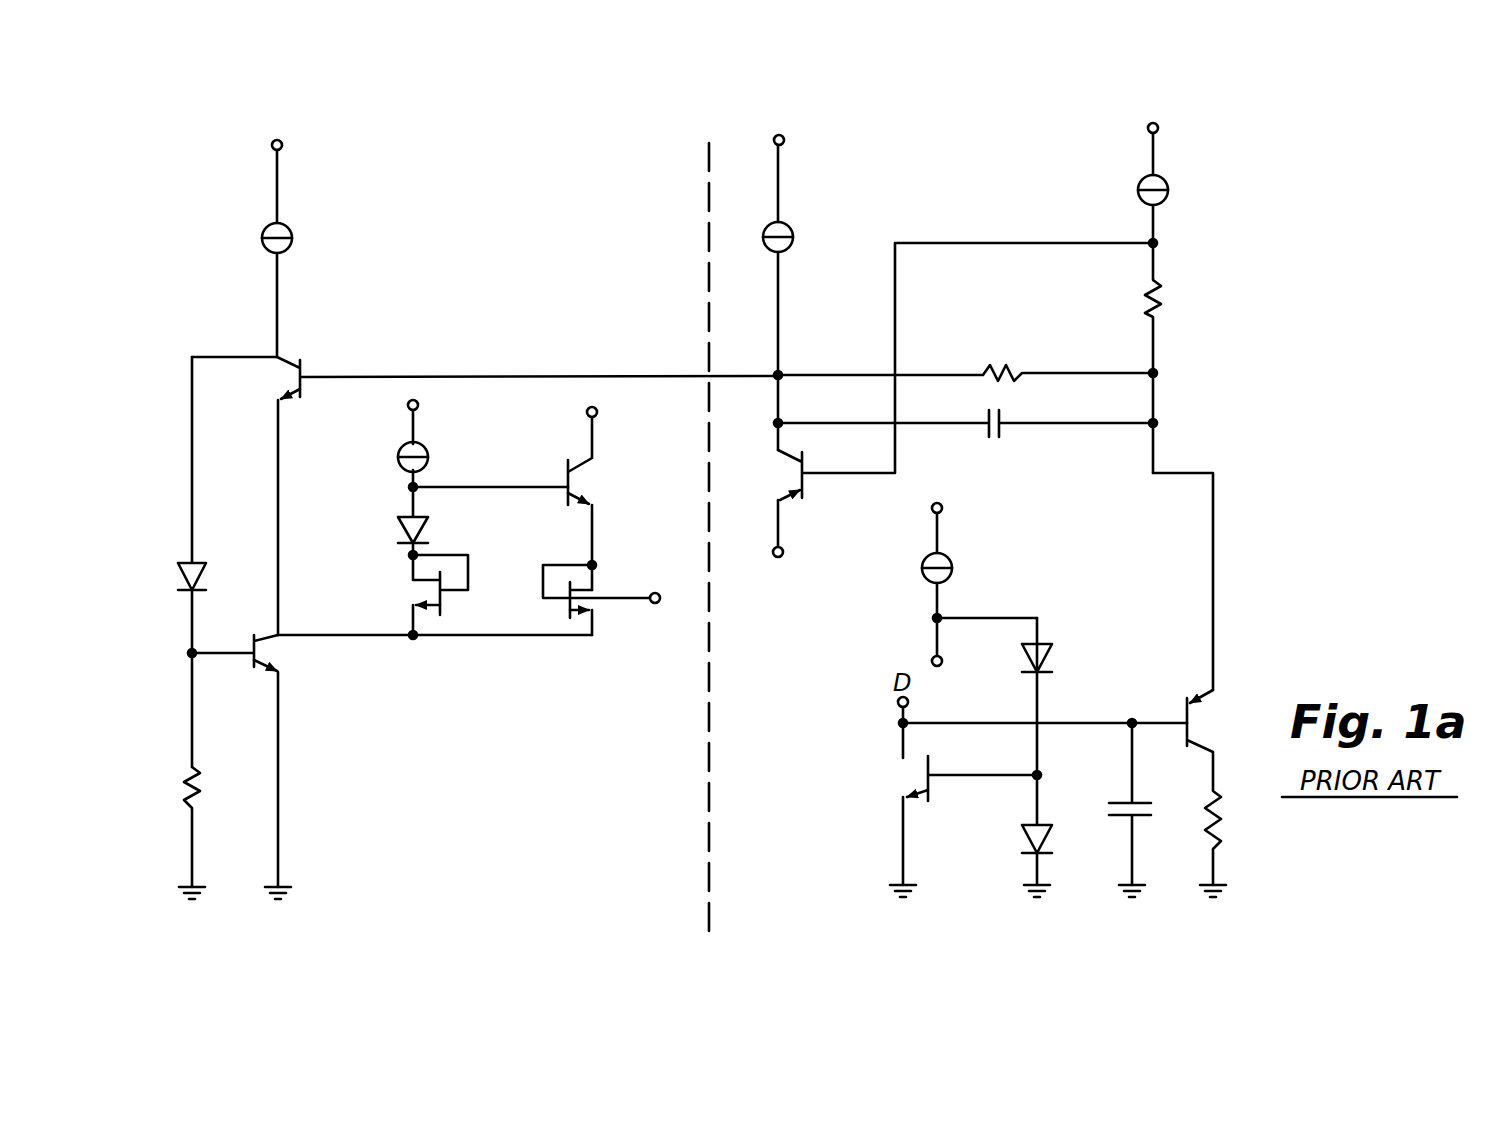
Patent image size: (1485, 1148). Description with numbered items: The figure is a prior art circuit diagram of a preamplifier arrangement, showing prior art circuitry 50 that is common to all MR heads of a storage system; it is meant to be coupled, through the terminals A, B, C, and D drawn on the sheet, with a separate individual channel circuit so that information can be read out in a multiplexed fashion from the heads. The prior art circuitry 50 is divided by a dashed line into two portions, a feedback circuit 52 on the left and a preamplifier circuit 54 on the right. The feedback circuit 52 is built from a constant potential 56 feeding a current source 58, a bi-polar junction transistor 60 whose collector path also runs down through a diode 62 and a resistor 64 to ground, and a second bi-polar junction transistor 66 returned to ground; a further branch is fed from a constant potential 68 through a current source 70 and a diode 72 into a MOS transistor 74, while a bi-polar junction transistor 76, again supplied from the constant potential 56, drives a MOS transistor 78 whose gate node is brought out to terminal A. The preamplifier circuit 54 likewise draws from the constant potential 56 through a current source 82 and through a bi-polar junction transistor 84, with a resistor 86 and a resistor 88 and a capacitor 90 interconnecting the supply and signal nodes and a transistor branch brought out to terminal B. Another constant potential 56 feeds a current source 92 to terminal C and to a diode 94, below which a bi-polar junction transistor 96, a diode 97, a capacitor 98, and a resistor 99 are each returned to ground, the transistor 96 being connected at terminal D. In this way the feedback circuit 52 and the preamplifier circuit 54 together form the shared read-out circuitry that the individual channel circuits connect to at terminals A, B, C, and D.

The prior art circuitry 50 is at (700, 158).
The feedback circuit 52 is at (484, 257).
The preamplifier circuit 54 is at (962, 166).
The constant potential 56 is at (283, 144).
The current source 58 is at (292, 230).
The bi-polar junction transistor 60 is at (304, 368).
The diode 62 is at (207, 578).
The resistor 64 is at (203, 781).
The bi-polar junction transistor 66 is at (258, 670).
The constant potential 68 is at (418, 402).
The current source 70 is at (401, 447).
The diode 72 is at (398, 532).
The MOS transistor 74 is at (443, 600).
The bi-polar junction transistor 76 is at (575, 478).
The MOS transistor 78 is at (566, 605).
The current source 82 is at (793, 228).
The bi-polar junction transistor 84 is at (1168, 182).
The resistor 86 is at (806, 485).
The resistor 88 is at (998, 366).
The capacitor 90 is at (1001, 432).
The current source 92 is at (952, 560).
The diode 94 is at (1050, 650).
The bi-polar junction transistor 96 is at (932, 785).
The diode 97 is at (1022, 841).
The capacitor 98 is at (1138, 822).
The resistor 99 is at (1220, 836).